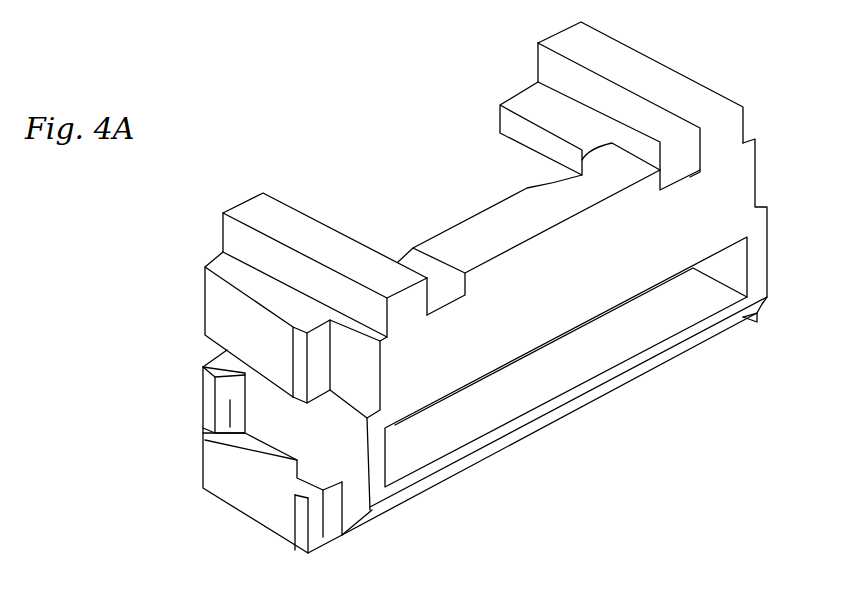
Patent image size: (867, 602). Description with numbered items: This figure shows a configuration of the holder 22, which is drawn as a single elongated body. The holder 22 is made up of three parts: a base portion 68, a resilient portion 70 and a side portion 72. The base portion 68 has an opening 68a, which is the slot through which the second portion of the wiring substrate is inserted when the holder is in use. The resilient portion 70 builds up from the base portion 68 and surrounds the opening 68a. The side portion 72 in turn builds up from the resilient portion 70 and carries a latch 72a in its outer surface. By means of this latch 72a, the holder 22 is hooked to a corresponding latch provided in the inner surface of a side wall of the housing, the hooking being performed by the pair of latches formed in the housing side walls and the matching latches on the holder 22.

The holder 22 is at (405, 126).
The base portion 68 is at (660, 360).
The opening 68a is at (463, 432).
The resilient portion 70 is at (195, 370).
The side portion 72 is at (660, 32).
The latch 72a is at (313, 370).